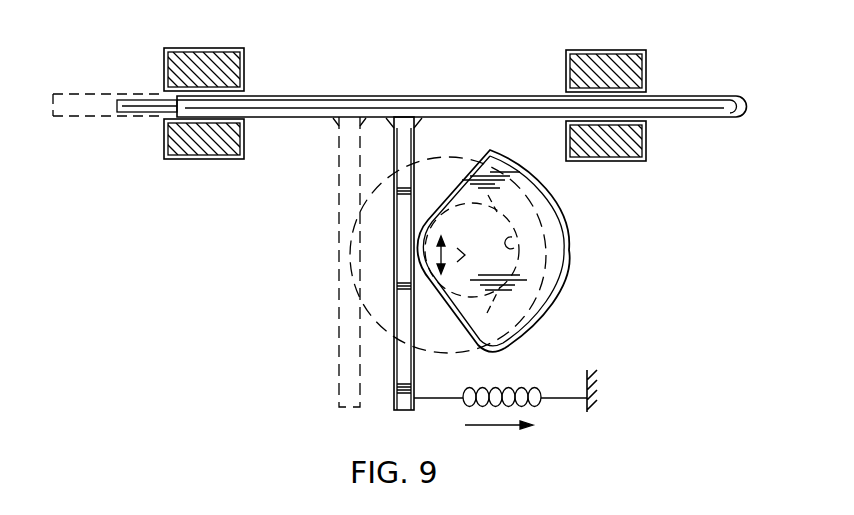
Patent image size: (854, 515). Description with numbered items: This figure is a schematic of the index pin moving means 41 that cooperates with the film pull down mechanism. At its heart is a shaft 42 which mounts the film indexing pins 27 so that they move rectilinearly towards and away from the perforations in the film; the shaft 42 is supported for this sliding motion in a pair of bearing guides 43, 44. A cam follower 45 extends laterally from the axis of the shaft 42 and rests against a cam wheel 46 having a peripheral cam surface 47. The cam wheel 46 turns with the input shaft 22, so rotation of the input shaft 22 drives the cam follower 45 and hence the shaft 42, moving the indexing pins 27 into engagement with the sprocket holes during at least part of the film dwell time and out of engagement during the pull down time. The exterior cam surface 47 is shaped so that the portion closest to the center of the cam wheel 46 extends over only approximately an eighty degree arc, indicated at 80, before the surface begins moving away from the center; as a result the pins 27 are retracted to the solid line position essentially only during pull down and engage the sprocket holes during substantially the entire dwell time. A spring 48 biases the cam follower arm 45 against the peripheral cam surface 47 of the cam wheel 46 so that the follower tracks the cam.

The film indexing pins 27 is at (141, 112).
The shaft 42 is at (287, 96).
The bearing guide 43 is at (220, 48).
The bearing guide 44 is at (617, 50).
The cam follower 45 is at (467, 165).
The cam wheel 46 is at (517, 251).
The peripheral cam surface 47 is at (560, 302).
The input shaft 22 is at (512, 243).
The index pin moving means 41 is at (572, 251).
The spring 48 is at (540, 403).
The rotation angle 80 is at (441, 258).